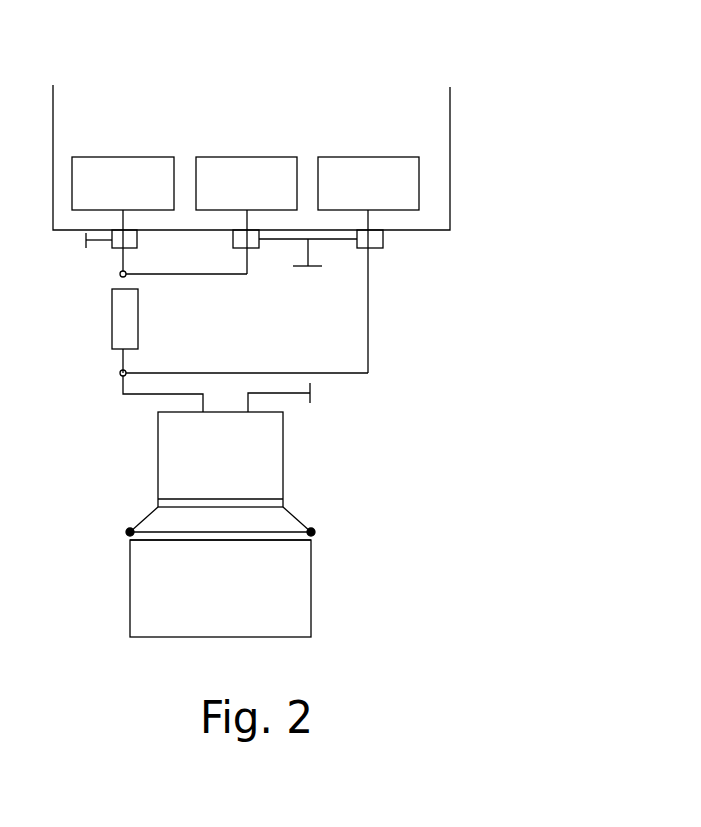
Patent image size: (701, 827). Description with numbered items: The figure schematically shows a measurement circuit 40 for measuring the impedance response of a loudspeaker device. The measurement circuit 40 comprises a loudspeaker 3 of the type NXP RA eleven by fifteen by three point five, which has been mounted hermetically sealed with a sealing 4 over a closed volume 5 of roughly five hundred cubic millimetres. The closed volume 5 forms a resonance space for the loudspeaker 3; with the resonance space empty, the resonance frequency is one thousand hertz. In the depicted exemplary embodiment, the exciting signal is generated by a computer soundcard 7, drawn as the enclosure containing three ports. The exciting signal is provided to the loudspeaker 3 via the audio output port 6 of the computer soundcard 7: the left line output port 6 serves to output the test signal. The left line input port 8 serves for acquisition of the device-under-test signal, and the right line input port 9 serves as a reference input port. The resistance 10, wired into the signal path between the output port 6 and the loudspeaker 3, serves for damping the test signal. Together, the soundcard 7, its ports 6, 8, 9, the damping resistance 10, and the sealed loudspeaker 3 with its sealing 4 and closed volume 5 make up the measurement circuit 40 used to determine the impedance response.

The measurement circuit 40 is at (523, 84).
The computer soundcard 7 is at (433, 125).
The audio output port 6 is at (123, 215).
The right line input port 9 is at (276, 215).
The left line input port 8 is at (368, 265).
The resistance 10 is at (123, 319).
The loudspeaker 3 is at (265, 440).
The sealing 4 is at (315, 533).
The closed volume 5 is at (288, 586).